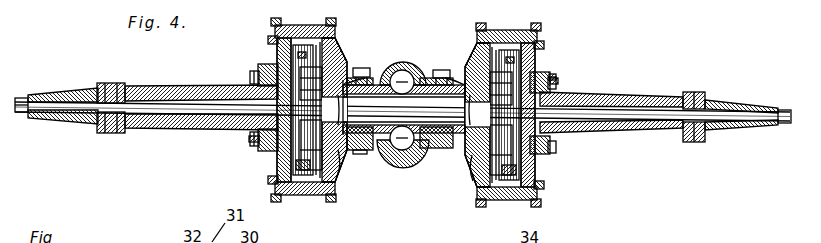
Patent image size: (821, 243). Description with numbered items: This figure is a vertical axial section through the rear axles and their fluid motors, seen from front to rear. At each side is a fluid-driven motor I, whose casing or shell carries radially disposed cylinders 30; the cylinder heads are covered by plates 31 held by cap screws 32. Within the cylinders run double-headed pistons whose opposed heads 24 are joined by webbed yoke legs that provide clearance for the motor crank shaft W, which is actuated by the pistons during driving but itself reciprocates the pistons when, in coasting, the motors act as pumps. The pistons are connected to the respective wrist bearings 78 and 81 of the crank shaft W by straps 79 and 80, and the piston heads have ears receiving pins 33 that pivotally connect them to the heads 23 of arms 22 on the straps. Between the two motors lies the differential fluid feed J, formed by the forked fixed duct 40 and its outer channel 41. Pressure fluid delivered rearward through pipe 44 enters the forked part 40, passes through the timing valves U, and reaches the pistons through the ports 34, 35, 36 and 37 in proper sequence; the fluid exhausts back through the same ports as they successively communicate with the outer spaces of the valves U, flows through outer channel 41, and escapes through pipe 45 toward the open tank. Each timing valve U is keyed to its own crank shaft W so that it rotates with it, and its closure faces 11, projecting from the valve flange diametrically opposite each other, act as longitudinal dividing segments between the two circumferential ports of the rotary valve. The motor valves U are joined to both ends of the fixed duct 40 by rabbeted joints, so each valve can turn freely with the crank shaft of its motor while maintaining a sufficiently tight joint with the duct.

The closure face 11 is at (268, 44).
The strap arm 22 is at (553, 76).
The arm head 23 is at (277, 165).
The piston head 24 is at (266, 60).
The cylinder 30 is at (256, 75).
The cover plate 31 is at (293, 26).
The cap screw 32 is at (276, 198).
The pin 33 is at (270, 182).
The port 34 is at (340, 62).
The port 35 is at (366, 72).
The port 36 is at (336, 172).
The port 37 is at (345, 166).
The forked part 40 is at (433, 145).
The outer channel 41 is at (375, 152).
The pipe 44 is at (398, 165).
The pipe 45 is at (403, 78).
The wrist bearing 78 is at (250, 62).
The strap 79 is at (252, 74).
The strap 80 is at (250, 142).
The wrist bearing 81 is at (252, 134).
The fluid-driven motor I is at (338, 33).
The differential fluid feed J is at (423, 153).
The timing valve U is at (347, 153).
The motor crank shaft W is at (176, 110).